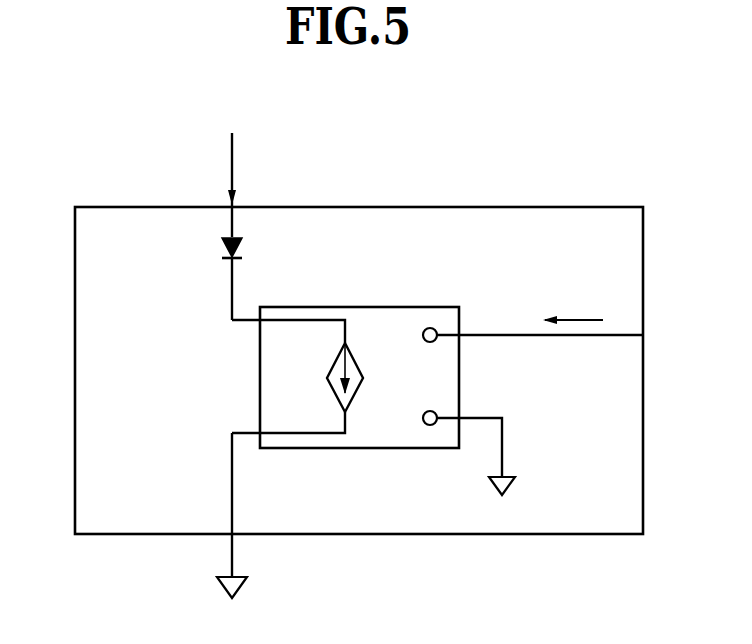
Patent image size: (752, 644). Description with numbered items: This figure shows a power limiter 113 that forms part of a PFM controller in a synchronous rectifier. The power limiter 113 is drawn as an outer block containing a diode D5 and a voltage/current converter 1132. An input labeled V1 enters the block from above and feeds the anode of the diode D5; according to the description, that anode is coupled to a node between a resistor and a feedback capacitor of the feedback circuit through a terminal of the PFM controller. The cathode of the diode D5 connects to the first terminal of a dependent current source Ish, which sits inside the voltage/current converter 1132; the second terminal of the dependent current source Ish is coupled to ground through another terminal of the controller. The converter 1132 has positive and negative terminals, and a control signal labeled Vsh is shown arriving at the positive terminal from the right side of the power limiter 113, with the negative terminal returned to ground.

The power limiter 113 is at (359, 344).
The voltage/current converter 1132 is at (357, 351).
The supply voltage V1 is at (233, 171).
The diode D5 is at (214, 278).
The dependent current source Ish is at (323, 377).
The shunt control voltage Vsh is at (540, 313).